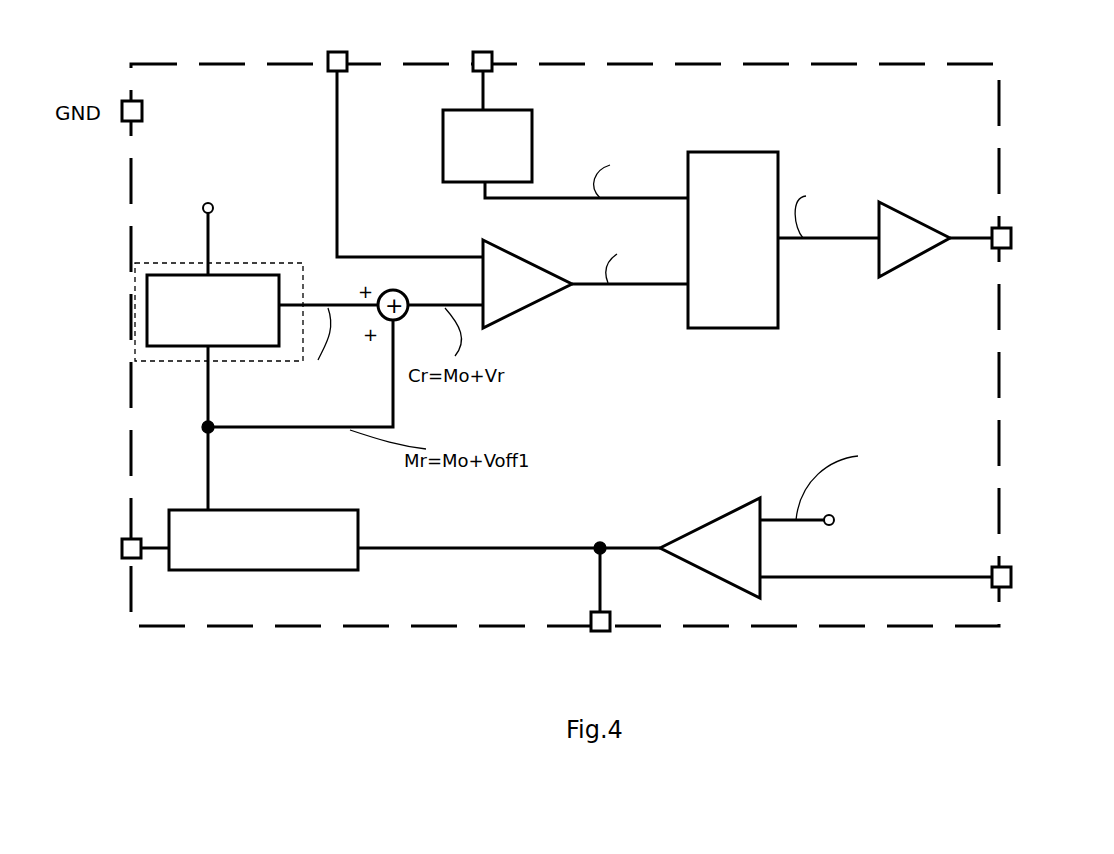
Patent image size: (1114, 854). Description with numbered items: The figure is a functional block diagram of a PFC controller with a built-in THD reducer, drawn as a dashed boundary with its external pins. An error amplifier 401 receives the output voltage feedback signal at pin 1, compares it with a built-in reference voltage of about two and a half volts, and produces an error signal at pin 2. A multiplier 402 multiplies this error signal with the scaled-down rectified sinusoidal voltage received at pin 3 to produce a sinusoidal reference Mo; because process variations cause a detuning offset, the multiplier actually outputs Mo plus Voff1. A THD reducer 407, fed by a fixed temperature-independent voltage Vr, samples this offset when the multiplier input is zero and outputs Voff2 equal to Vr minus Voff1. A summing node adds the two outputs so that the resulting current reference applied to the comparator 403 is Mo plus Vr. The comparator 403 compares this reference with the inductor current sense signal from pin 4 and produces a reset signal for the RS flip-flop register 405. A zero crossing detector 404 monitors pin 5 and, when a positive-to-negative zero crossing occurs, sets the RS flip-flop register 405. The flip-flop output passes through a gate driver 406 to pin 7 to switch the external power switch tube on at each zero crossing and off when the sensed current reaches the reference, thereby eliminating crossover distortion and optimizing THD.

The error amplifier 401 is at (688, 530).
The multiplier 402 is at (342, 510).
The comparator 403 is at (540, 298).
The zero crossing detector 404 is at (532, 128).
The RS flip-flop register 405 is at (746, 333).
The gate driver 406 is at (906, 212).
The THD reducer 407 is at (263, 275).
The pin 1 is at (1011, 588).
The pin 2 is at (589, 605).
The pin 3 is at (104, 537).
The pin 4 is at (394, 139).
The pin 5 is at (477, 65).
The pin 7 is at (1009, 235).